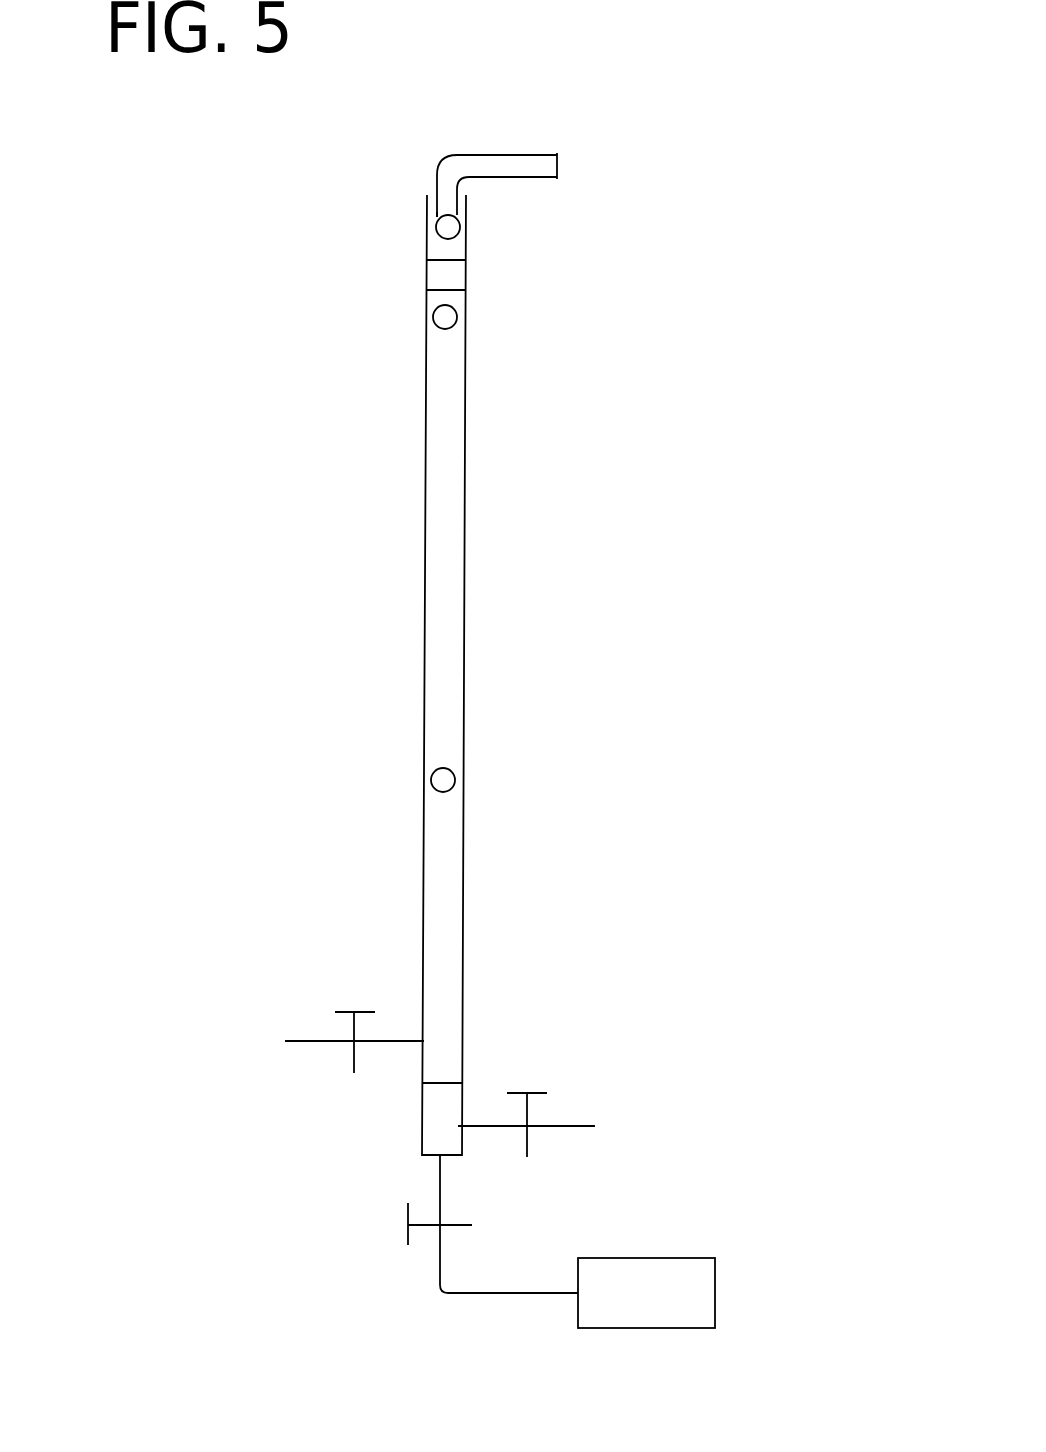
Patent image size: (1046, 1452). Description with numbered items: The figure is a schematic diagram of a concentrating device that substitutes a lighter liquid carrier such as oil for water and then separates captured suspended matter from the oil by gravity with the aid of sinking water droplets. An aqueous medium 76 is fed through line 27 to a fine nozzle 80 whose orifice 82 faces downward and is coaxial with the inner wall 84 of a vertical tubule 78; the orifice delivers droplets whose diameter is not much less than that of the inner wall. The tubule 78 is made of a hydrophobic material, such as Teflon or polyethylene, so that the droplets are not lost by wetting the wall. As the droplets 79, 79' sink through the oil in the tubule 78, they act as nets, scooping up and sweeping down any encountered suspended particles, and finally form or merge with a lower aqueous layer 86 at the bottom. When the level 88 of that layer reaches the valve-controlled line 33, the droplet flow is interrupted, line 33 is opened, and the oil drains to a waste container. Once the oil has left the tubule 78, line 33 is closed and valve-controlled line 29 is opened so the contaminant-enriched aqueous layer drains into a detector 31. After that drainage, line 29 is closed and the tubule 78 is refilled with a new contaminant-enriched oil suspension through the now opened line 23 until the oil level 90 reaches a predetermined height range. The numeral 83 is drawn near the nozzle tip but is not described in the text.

The line 27 is at (507, 152).
The aqueous medium 76 is at (557, 167).
The fine nozzle 80 is at (430, 173).
The orifice 82 is at (448, 207).
The bead 83 is at (467, 227).
The inner wall 84 is at (462, 258).
The oil level 90 is at (447, 288).
The sinking water droplet 79' is at (588, 319).
The sinking water droplet 79 is at (593, 781).
The tubule 78 is at (462, 903).
The valve-controlled line 33 is at (337, 1040).
The line 23 is at (560, 1122).
The level 88 is at (443, 1085).
The lower aqueous layer 86 is at (430, 1142).
The valve-controlled line 29 is at (440, 1212).
The detector 31 is at (715, 1277).